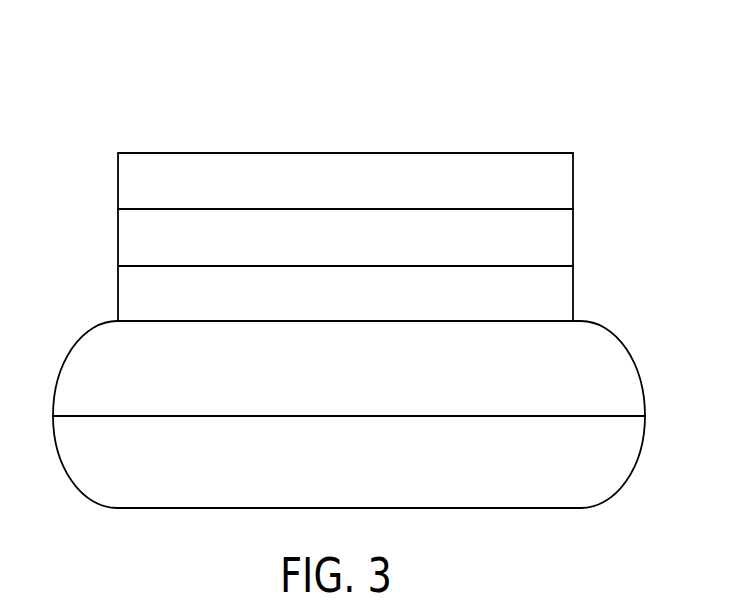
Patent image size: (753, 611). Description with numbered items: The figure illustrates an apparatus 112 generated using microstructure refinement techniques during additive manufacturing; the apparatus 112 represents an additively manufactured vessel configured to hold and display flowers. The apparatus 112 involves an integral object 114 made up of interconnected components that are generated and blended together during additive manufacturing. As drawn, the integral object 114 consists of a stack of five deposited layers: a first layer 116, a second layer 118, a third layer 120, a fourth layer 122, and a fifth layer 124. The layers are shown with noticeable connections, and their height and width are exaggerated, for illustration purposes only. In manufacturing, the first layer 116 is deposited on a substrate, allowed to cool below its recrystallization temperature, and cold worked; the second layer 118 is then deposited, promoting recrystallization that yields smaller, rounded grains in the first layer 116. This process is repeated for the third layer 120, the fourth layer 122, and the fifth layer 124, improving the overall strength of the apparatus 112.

The apparatus 112 is at (68, 110).
The integral object 114 is at (252, 152).
The first layer 116 is at (641, 445).
The second layer 118 is at (627, 352).
The third layer 120 is at (573, 290).
The fourth layer 122 is at (573, 232).
The fifth layer 124 is at (573, 168).